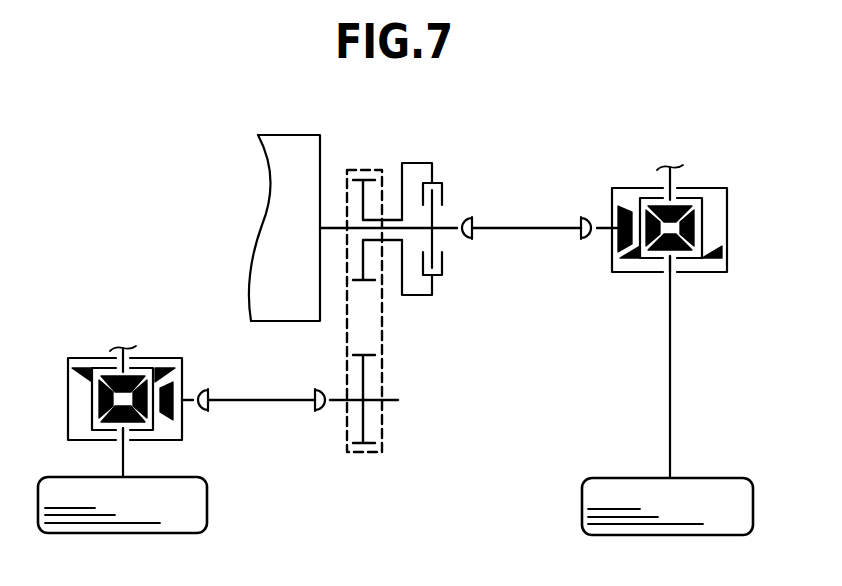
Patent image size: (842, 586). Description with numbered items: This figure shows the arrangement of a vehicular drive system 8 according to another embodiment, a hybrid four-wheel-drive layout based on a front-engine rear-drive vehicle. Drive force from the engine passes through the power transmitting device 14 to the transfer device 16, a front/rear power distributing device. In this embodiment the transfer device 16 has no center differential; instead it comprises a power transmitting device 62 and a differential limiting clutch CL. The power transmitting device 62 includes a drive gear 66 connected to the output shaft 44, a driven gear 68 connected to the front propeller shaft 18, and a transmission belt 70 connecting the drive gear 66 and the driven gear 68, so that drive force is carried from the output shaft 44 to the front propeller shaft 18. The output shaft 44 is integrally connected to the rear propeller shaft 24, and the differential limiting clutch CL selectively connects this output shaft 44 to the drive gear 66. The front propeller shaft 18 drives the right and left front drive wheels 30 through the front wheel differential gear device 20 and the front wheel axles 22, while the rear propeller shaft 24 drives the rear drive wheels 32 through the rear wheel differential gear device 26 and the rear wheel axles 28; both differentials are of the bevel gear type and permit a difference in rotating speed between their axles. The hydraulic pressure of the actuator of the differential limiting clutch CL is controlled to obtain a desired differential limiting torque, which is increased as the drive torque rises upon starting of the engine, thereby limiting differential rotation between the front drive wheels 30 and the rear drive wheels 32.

The vehicular drive system 8 is at (114, 184).
The power transmitting device 14 is at (258, 293).
The transfer device 16 is at (381, 109).
The front propeller shaft 18 is at (262, 401).
The front wheel differential gear device 20 is at (80, 358).
The front wheel axles 22 is at (124, 466).
The rear propeller shaft 24 is at (528, 230).
The rear wheel differential gear device 26 is at (624, 188).
The rear wheel axles 28 is at (668, 370).
The front drive wheels 30 is at (205, 506).
The rear drive wheels 32 is at (590, 494).
The output shaft 44 is at (326, 226).
The power transmitting device 62 is at (375, 460).
The drive gear 66 is at (376, 174).
The driven gear 68 is at (356, 353).
The transmission belt 70 is at (383, 343).
The differential limiting clutch CL is at (447, 185).